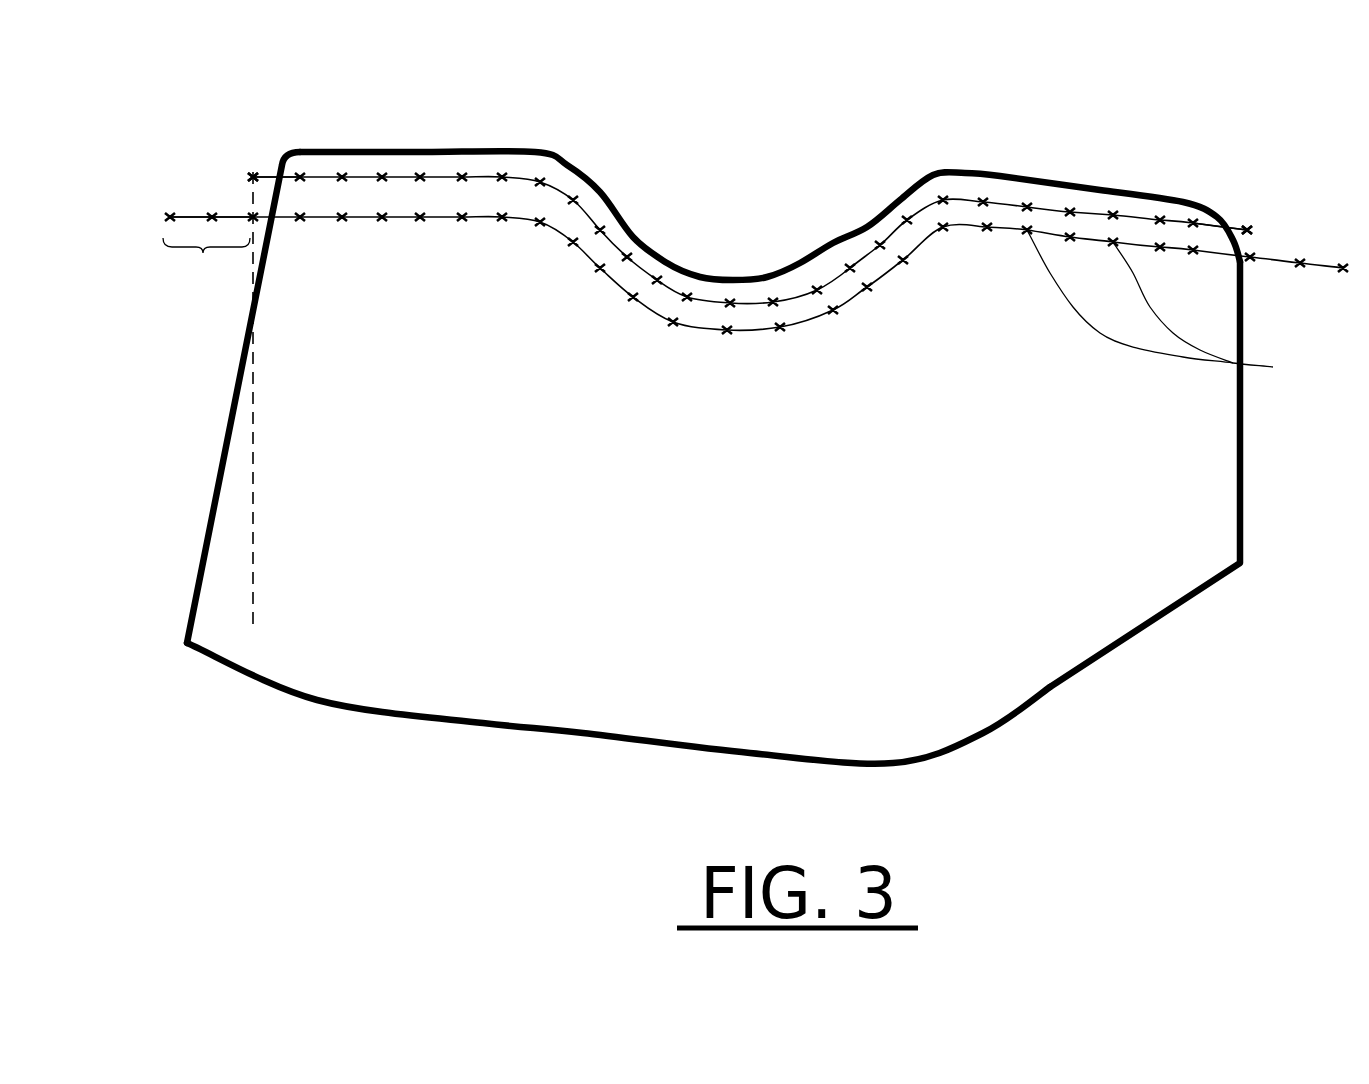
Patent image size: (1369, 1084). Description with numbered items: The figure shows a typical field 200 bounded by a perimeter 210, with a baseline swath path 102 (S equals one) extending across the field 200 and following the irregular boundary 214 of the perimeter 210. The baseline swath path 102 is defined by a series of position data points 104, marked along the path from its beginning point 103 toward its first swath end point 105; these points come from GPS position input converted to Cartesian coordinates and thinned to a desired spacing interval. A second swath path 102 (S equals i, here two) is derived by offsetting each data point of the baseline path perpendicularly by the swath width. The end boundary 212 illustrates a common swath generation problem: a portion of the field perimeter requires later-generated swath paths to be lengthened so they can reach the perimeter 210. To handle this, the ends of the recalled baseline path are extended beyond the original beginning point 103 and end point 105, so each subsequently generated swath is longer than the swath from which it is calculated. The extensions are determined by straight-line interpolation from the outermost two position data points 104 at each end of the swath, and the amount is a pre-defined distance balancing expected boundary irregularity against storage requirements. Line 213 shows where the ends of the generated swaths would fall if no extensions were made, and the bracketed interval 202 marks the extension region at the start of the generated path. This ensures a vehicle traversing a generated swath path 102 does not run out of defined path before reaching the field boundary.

The swath path 102 is at (163, 384).
The beginning point 103 is at (251, 177).
The position data points 104 is at (1184, 311).
The end point 105 is at (1247, 230).
The field 200 is at (677, 474).
The stitch margin offset 202 is at (208, 265).
The perimeter 210 is at (583, 733).
The end boundary 212 is at (222, 466).
The line 213 is at (250, 565).
The irregular boundary 214 is at (860, 230).